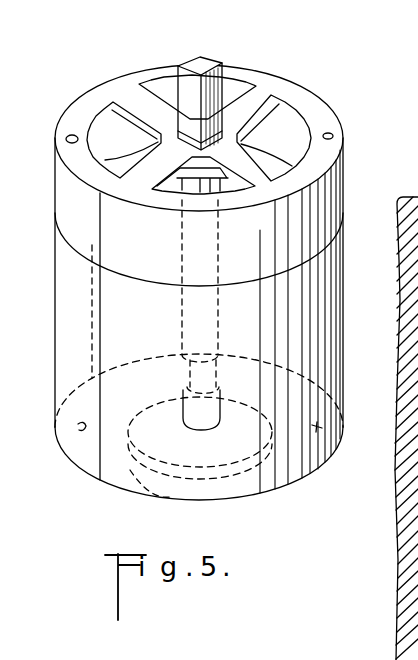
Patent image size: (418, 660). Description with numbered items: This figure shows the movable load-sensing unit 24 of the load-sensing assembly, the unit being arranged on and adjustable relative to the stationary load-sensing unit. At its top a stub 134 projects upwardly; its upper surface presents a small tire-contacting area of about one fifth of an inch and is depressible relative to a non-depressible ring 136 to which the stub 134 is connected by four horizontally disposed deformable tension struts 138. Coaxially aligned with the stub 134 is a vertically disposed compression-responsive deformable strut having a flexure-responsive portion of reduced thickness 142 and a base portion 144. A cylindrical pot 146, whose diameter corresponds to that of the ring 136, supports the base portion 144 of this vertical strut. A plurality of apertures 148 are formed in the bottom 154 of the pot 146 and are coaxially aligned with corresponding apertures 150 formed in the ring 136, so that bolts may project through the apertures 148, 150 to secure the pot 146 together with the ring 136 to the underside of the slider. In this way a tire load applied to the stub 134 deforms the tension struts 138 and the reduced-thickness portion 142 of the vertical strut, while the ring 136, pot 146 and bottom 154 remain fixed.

The movable load-sensing unit 24 is at (345, 97).
The stub 134 is at (204, 62).
The non-depressible ring 136 is at (342, 117).
The deformable tension struts 138 is at (150, 100).
The flexure-responsive portion of reduced thickness 142 is at (239, 315).
The base portion 144 is at (241, 466).
The cylindrical pot 146 is at (343, 362).
The apertures 148 is at (80, 430).
The apertures 150 is at (68, 136).
The bottom 154 is at (148, 483).